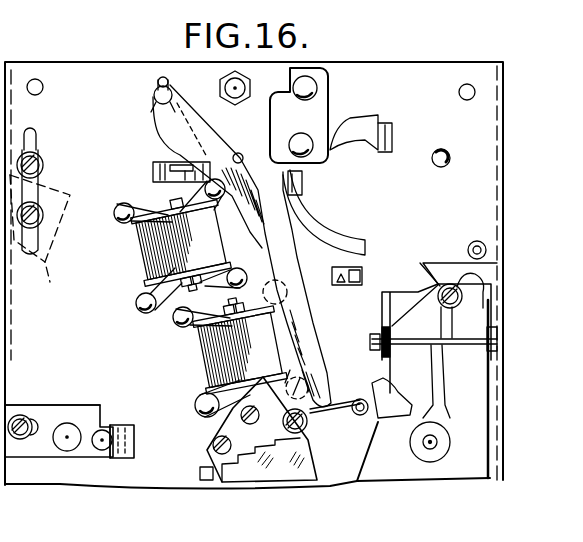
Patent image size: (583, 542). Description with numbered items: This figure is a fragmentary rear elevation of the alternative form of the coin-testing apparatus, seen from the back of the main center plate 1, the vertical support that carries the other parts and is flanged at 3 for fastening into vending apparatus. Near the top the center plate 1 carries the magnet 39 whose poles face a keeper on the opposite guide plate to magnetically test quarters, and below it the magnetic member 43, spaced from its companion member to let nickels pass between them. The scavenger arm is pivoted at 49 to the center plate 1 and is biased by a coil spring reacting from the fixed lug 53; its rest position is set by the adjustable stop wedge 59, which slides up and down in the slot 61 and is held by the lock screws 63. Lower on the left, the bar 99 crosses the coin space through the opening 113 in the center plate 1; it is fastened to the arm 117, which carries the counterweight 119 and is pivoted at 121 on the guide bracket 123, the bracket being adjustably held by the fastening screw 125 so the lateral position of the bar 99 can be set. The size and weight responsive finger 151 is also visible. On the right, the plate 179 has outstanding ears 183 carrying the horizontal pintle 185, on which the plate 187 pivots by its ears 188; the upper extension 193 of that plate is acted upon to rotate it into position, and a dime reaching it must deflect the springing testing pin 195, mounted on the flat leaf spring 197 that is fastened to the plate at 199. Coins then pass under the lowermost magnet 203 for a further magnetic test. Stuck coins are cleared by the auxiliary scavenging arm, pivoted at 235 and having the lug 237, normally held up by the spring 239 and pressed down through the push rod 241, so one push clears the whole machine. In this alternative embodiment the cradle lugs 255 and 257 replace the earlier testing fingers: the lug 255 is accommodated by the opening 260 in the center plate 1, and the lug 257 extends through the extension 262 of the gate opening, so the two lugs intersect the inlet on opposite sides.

The main center plate 1 is at (118, 70).
The flange 3 is at (499, 177).
The magnet 39 is at (138, 246).
The magnetic member 43 is at (205, 355).
The pivot 49 is at (240, 100).
The fixed lug 53 is at (282, 72).
The adjustable stop wedge 59 is at (44, 262).
The slot 61 is at (37, 133).
The lock screws 63 is at (38, 210).
The bar 99 is at (135, 437).
The opening 113 is at (126, 458).
The arm 117 is at (86, 426).
The counterweight 119 is at (65, 425).
The pivot 121 is at (98, 451).
The guide bracket 123 is at (73, 410).
The fastening screw 125 is at (20, 413).
The size and weight responsive finger 151 is at (362, 273).
The plate 179 is at (450, 262).
The outstanding ears 183 is at (381, 305).
The horizontal pintle 185 is at (450, 344).
The plate 187 is at (481, 478).
The ears 188 is at (492, 330).
The upper extension 193 is at (463, 293).
The springing testing pin 195 is at (432, 450).
The flat leaf spring 197 is at (437, 421).
The fastening of the leaf spring 199 is at (421, 263).
The magnet 203 is at (266, 470).
The pivot 235 is at (352, 403).
The lug 237 is at (396, 420).
The spring 239 is at (333, 416).
The push rod 241 is at (280, 249).
The lug 255 is at (392, 132).
The lug 257 is at (302, 181).
The opening 260 is at (353, 126).
The extension of the opening 262 is at (330, 233).